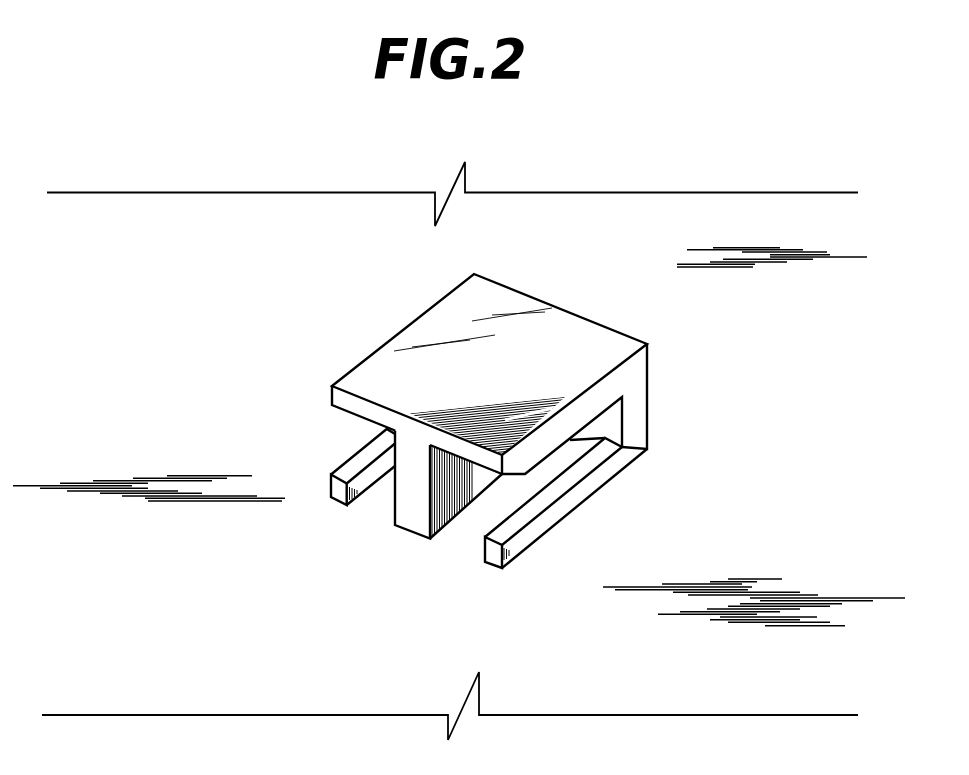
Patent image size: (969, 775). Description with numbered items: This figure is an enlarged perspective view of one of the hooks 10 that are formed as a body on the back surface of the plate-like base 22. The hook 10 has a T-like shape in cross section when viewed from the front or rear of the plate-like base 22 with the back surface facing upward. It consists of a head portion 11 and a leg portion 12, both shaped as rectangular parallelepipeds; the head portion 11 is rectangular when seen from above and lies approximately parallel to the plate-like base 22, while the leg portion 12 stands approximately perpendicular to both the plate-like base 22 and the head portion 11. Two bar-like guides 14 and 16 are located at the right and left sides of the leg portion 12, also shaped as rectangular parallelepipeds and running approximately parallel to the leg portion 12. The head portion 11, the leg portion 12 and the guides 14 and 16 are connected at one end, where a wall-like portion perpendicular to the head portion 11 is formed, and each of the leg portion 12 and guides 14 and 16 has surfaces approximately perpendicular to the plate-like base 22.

The hook 10 is at (608, 333).
The head portion 11 is at (332, 397).
The leg portion 12 is at (407, 530).
The bar-like guide 14 is at (587, 502).
The bar-like guide 16 is at (332, 498).
The plate-like base 22 is at (338, 332).